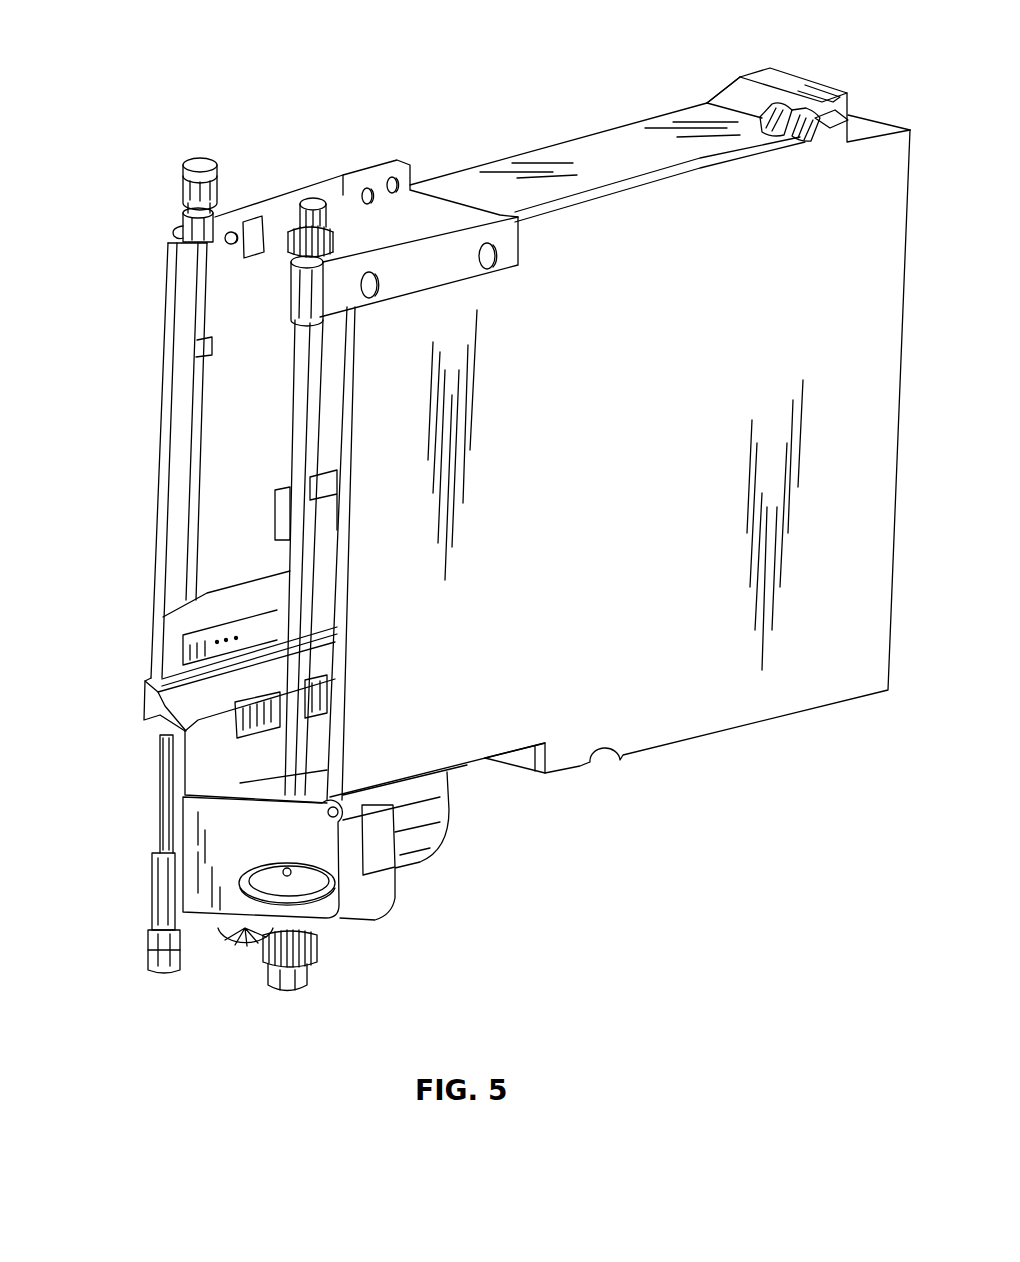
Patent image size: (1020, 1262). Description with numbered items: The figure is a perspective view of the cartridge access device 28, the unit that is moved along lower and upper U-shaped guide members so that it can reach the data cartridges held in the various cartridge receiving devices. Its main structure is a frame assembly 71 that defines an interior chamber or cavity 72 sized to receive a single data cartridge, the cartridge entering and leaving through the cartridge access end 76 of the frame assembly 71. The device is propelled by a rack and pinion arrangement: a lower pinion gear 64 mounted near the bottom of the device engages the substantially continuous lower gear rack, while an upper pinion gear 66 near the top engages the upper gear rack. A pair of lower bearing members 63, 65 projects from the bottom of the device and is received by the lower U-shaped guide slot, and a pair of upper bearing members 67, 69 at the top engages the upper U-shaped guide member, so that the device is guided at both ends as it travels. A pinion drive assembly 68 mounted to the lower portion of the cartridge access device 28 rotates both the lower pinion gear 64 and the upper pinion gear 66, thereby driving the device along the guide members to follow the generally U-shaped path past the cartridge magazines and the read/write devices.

The cartridge access device 28 is at (129, 460).
The lower bearing member 63 is at (177, 968).
The lower pinion gear 64 is at (312, 958).
The lower bearing member 65 is at (303, 988).
The upper pinion gear 66 is at (339, 223).
The upper bearing member 67 is at (183, 172).
The pinion drive assembly 68 is at (455, 834).
The upper bearing member 69 is at (301, 194).
The frame assembly 71 is at (805, 77).
The interior chamber or cavity 72 is at (236, 376).
The cartridge access end 76 is at (157, 541).